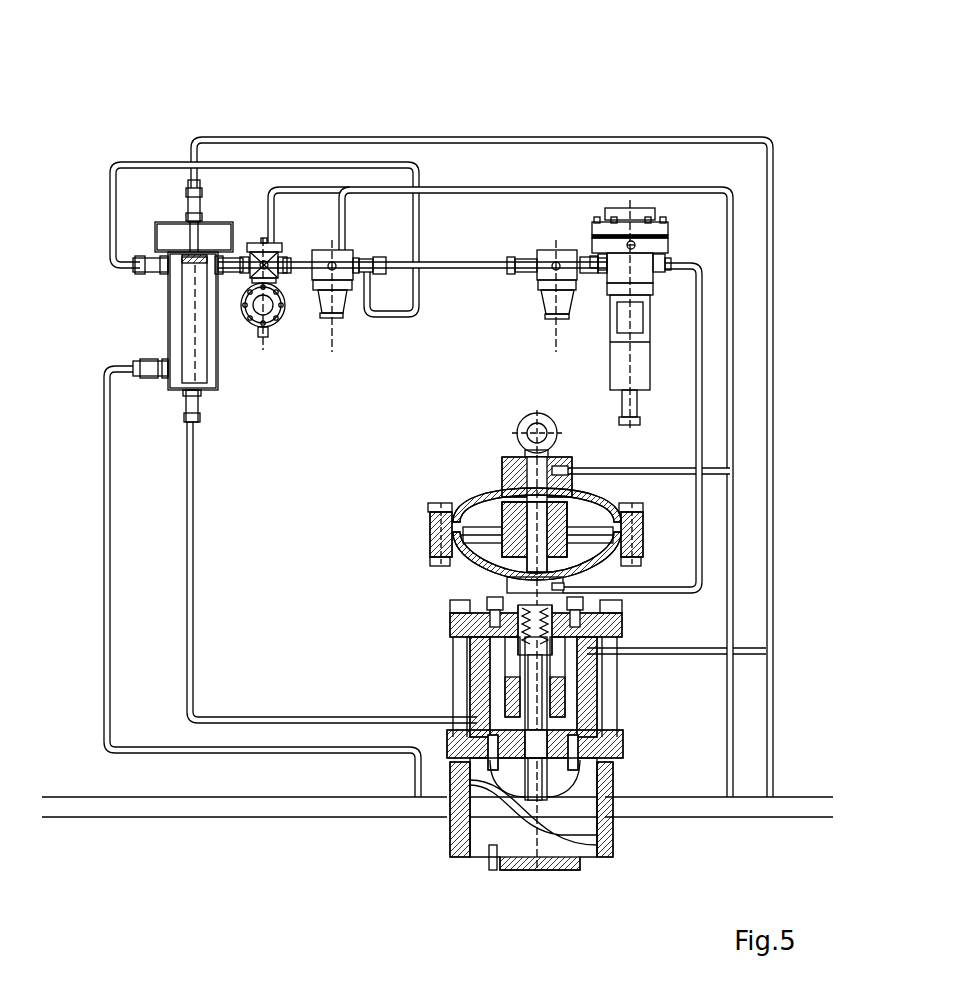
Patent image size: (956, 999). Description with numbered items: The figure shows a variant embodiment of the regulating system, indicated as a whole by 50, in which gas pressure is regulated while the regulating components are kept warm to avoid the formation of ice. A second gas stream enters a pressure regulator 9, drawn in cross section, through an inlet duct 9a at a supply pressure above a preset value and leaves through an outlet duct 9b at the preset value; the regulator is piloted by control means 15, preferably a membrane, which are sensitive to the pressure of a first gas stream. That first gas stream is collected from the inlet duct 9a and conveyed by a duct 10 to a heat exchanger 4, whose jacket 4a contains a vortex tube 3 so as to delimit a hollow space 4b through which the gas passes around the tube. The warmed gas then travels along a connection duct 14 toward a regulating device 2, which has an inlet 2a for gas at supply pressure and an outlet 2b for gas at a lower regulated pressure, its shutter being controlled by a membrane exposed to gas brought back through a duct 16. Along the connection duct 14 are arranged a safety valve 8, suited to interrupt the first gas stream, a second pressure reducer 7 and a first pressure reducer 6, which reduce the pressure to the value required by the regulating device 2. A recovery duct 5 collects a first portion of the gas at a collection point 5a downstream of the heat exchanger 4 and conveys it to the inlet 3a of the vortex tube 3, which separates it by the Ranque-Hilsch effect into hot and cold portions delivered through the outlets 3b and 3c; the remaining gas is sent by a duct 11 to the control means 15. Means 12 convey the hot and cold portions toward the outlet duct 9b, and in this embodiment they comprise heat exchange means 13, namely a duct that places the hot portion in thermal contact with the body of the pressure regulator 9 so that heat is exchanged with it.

The regulating device 2 is at (664, 230).
The inlet 2a is at (592, 252).
The outlet 2b is at (672, 255).
The vortex tube 3 is at (172, 281).
The inlet 3a is at (140, 258).
The outlet 3b is at (197, 420).
The outlet 3c is at (195, 185).
The heat exchanger 4 is at (129, 256).
The jacket 4a is at (165, 296).
The hollow space 4b is at (170, 334).
The recovery duct 5 is at (352, 163).
The collection point 5a is at (370, 252).
The first pressure reducer 6 is at (555, 240).
The second pressure reducer 7 is at (329, 238).
The safety valve 8 is at (258, 238).
The pressure regulator 9 is at (629, 640).
The inlet duct 9a is at (335, 822).
The outlet duct 9b is at (797, 822).
The duct 10 is at (107, 607).
The duct 11 is at (700, 370).
The means for conveying the hot and cold portions 12 is at (440, 133).
The heat exchange means 13 is at (588, 697).
The connection duct 14 is at (390, 715).
The control means 15 is at (662, 535).
The duct 16 is at (733, 275).
The regulating system 50 is at (780, 65).